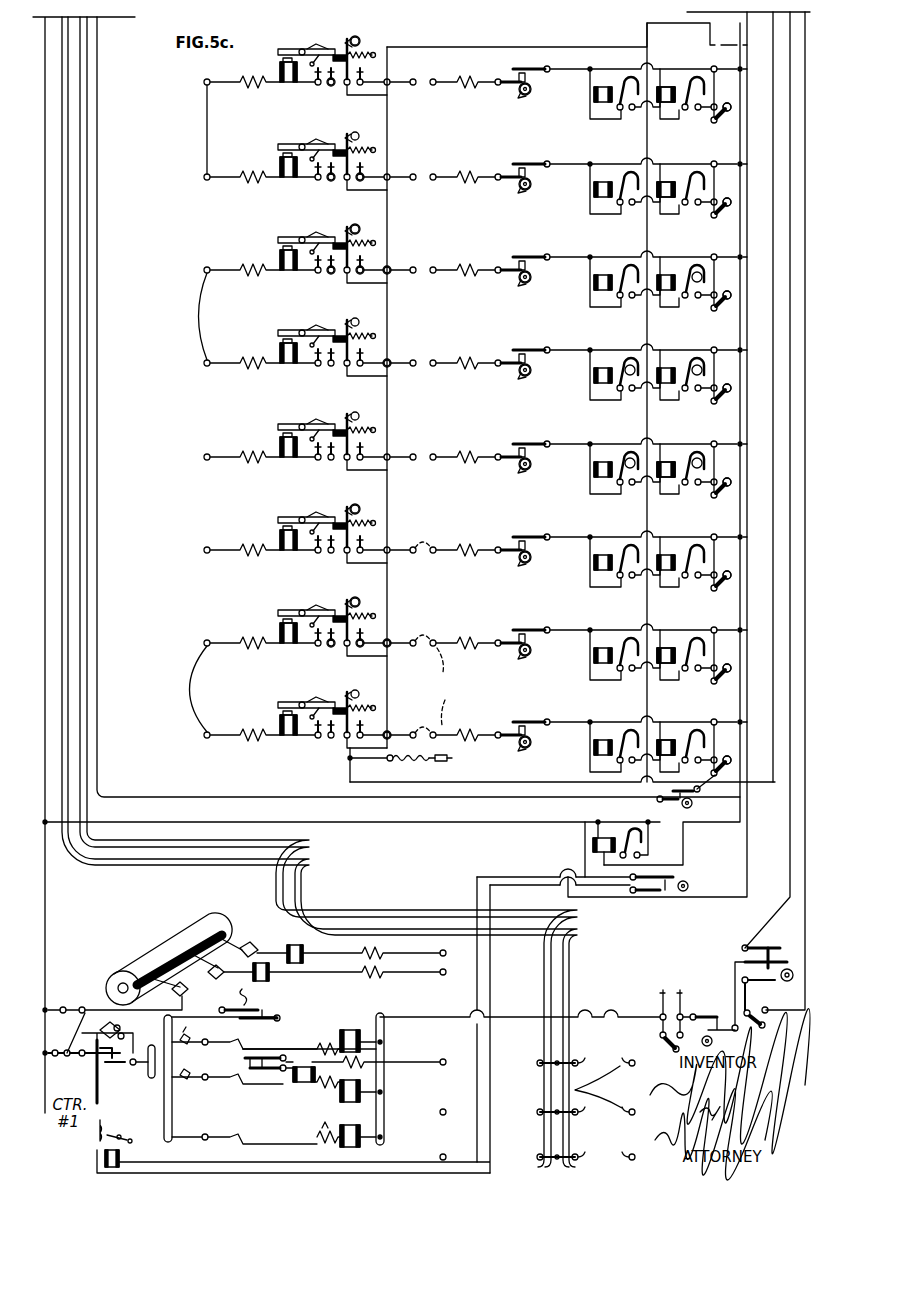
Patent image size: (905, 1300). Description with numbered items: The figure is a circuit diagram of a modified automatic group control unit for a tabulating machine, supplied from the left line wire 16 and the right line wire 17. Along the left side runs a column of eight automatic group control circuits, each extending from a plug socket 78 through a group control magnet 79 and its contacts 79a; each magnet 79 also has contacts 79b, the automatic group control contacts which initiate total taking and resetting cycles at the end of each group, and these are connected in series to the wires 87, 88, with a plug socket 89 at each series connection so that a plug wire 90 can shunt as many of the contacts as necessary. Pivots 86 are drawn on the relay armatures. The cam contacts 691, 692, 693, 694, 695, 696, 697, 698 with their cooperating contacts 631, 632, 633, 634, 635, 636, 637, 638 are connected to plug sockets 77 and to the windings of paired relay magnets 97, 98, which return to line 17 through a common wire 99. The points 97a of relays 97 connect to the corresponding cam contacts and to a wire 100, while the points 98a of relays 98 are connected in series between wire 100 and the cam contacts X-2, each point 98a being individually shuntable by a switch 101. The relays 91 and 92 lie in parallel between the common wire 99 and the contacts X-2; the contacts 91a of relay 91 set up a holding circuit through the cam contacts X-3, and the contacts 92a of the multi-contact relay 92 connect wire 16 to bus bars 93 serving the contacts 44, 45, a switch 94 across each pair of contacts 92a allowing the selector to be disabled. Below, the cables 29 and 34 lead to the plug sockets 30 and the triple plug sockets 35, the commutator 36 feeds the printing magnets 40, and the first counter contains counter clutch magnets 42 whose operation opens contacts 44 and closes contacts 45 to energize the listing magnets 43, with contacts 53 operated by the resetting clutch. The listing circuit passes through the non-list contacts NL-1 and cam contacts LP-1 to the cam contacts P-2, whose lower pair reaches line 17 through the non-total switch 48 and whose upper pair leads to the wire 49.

The left line wire 16 is at (40, 137).
The right line wire 17 is at (805, 230).
The cable 29 is at (70, 490).
The plug socket 30 is at (575, 1090).
The cable 34 is at (80, 517).
The triple plug socket 35 is at (545, 1058).
The commutator 36 is at (160, 940).
The printing magnet 40 is at (250, 975).
The counter clutch magnet 42 is at (305, 1067).
The listing magnet 43 is at (350, 1030).
The contacts 44 is at (252, 1068).
The contacts 45 is at (275, 1085).
The non-total switch 48 is at (755, 1028).
The wire 49 is at (793, 163).
The contacts 53 is at (265, 1013).
The plug socket 77 is at (436, 637).
The plug socket 78 is at (191, 408).
The group control magnet 79 is at (280, 72).
The contacts 79a is at (325, 86).
The automatic group control contacts 79b is at (360, 658).
The pivot 86 is at (360, 38).
The wire 87 is at (760, 30).
The wire 88 is at (773, 107).
The plug socket 89 is at (390, 267).
The plug wire 90 is at (405, 763).
The relay 91 is at (604, 845).
The contacts 91a is at (633, 828).
The multi-contact relay 92 is at (105, 1157).
The contacts 92a is at (118, 1068).
The bus bar 93 is at (151, 1080).
The switch 94 is at (120, 1028).
The relay magnet 97 is at (603, 88).
The points 97a is at (622, 358).
The relay magnet 98 is at (665, 100).
The points 98a is at (692, 265).
The common wire 99 is at (740, 430).
The wire 100 is at (97, 633).
The switch 101 is at (722, 212).
The cam contacts 631 is at (530, 746).
The cam contacts 632 is at (530, 654).
The cam contacts 633 is at (530, 561).
The cam contacts 634 is at (530, 468).
The cam contacts 635 is at (530, 374).
The cam contacts 636 is at (530, 281).
The cam contacts 637 is at (530, 188).
The cam contacts 638 is at (530, 93).
The cam contacts 691 is at (520, 733).
The cam contacts 692 is at (520, 641).
The cam contacts 693 is at (520, 548).
The cam contacts 694 is at (520, 455).
The cam contacts 695 is at (520, 361).
The cam contacts 696 is at (520, 268).
The cam contacts 697 is at (520, 175).
The cam contacts 698 is at (520, 80).
The cam contacts X-2 is at (700, 798).
The cam contacts X-3 is at (675, 893).
The cam contacts P-2 is at (790, 958).
The non-list contacts NL-1 is at (672, 990).
The cam contacts LP-1 is at (717, 1012).